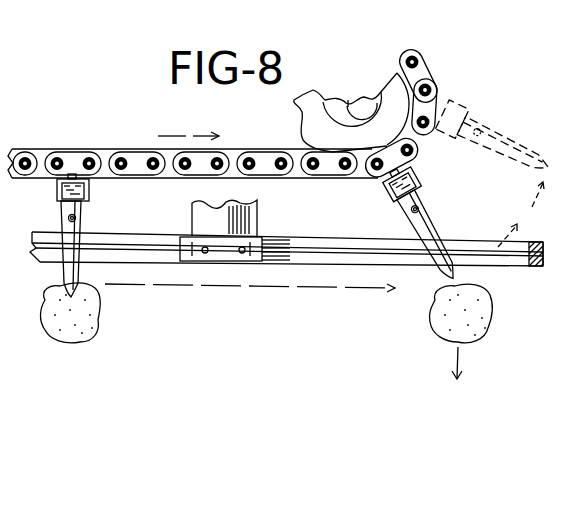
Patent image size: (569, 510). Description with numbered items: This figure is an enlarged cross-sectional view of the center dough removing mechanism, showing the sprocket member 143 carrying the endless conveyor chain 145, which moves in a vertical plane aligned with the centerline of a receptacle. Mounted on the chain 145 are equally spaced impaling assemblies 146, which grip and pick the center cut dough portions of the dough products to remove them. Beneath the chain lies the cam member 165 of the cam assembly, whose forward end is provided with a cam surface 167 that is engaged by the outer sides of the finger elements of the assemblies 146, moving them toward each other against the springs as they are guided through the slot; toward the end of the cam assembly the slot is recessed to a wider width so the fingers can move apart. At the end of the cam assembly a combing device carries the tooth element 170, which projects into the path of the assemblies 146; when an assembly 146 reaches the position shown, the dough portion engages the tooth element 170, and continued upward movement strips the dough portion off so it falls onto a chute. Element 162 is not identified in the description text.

The sprocket member 143 is at (408, 90).
The endless conveyor chain 145 is at (120, 148).
The impaling assembly 146 is at (62, 220).
The block 162 is at (250, 223).
The cam member 165 is at (291, 265).
The cam surface 167 is at (125, 242).
The tooth element 170 is at (498, 254).